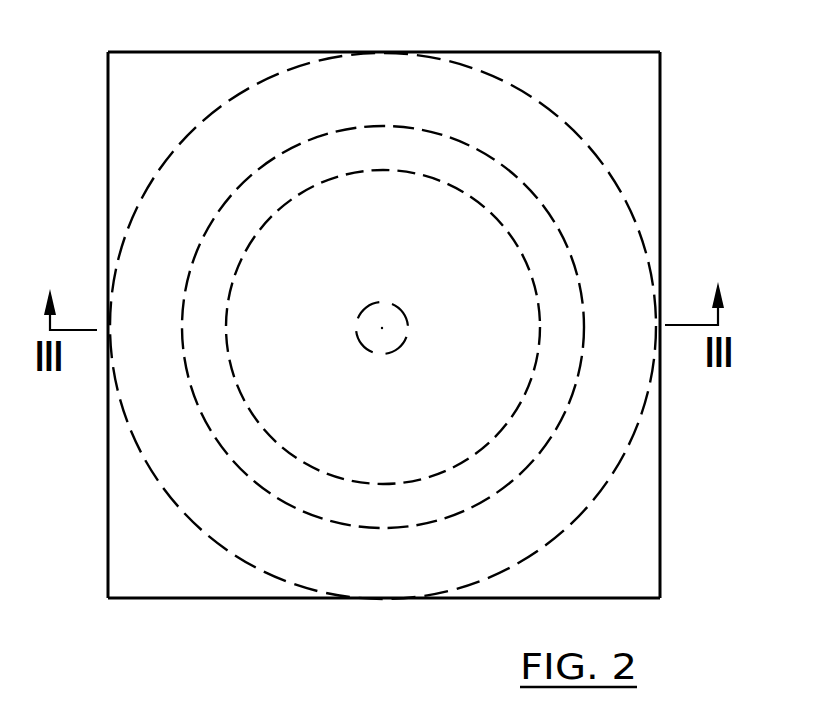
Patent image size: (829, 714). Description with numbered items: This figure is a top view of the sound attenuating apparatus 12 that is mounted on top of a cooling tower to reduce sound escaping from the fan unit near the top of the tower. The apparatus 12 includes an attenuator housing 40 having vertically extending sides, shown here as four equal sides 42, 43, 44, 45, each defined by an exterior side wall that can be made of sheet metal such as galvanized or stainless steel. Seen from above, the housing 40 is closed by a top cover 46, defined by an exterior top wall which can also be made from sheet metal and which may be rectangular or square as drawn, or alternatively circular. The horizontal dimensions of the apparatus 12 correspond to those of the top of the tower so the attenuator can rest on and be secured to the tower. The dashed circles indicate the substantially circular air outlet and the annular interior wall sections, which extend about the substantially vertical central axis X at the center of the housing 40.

The sound attenuating apparatus 12 is at (696, 156).
The attenuator housing 40 is at (606, 65).
The side 42 is at (188, 598).
The side 43 is at (107, 480).
The side 44 is at (535, 52).
The side 45 is at (660, 97).
The top cover 46 is at (647, 505).
The central axis X is at (398, 312).